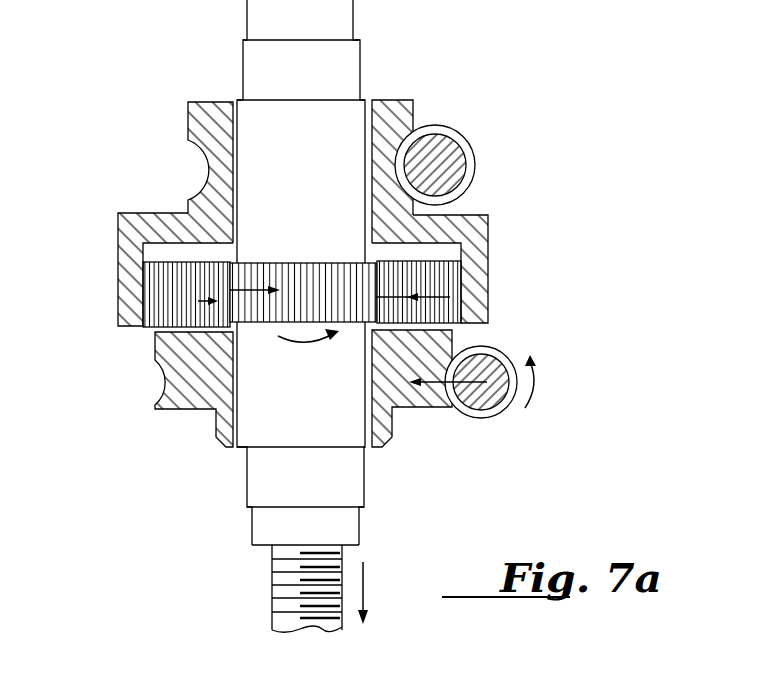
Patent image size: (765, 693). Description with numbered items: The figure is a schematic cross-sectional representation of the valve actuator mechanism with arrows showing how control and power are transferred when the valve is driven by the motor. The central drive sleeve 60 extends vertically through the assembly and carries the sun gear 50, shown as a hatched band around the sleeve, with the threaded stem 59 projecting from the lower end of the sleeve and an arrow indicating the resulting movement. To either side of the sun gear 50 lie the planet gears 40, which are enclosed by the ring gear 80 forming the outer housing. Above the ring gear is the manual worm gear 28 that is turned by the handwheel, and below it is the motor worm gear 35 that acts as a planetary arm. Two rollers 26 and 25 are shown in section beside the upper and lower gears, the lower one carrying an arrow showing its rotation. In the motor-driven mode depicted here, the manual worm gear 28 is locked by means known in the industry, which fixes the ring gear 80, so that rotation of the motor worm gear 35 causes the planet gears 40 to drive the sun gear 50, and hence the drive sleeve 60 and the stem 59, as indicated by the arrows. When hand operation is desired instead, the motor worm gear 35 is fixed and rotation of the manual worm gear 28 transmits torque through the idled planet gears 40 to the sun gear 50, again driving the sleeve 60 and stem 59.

The drive sleeve 60 is at (316, 138).
The manual worm gear 28 is at (223, 147).
The ring gear 80 is at (133, 241).
The planet gears 40 is at (167, 313).
The sun gear 50 is at (307, 282).
The motor worm gear 35 is at (208, 390).
The upper roller 26 is at (450, 165).
The lower roller 25 is at (497, 393).
The stem 59 is at (287, 587).